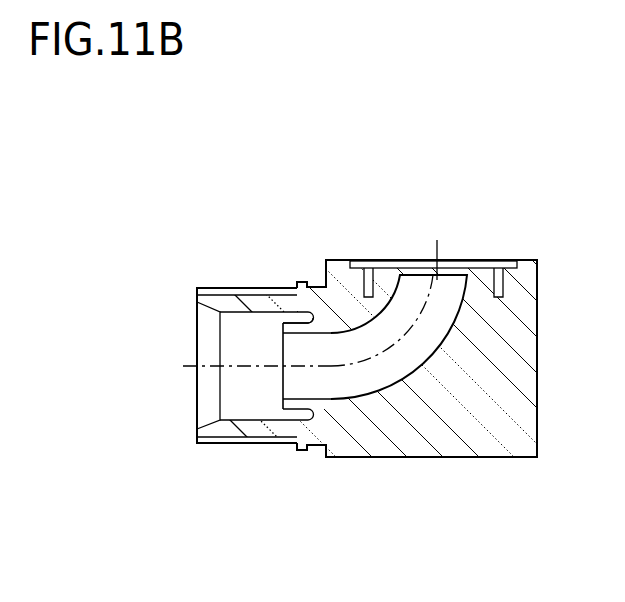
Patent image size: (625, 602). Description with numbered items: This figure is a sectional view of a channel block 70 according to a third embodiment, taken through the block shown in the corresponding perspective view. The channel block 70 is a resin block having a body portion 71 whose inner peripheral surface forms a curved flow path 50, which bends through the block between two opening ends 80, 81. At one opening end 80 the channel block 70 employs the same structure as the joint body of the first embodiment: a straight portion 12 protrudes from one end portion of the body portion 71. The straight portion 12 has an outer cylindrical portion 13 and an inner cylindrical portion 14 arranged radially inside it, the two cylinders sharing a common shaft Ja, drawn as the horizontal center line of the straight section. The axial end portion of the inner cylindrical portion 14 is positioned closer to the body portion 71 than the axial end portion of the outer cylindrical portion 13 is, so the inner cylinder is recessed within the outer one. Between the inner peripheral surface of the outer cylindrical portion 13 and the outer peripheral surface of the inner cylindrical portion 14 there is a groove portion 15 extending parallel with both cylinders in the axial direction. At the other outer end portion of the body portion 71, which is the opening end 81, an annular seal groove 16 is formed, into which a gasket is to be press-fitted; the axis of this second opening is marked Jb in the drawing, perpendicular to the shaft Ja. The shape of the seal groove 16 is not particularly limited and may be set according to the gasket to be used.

The channel block 70 is at (121, 226).
The opening end 80 is at (186, 333).
The straight portion 12 is at (306, 527).
The outer cylindrical portion 13 is at (227, 428).
The inner cylindrical portion 14 is at (298, 409).
The groove portion 15 is at (269, 323).
The annular seal groove 16 is at (485, 259).
The curved flow path 50 is at (360, 347).
The body portion 71 is at (430, 428).
The opening end 81 is at (412, 252).
The common shaft Ja is at (234, 366).
The axis Jb is at (436, 242).